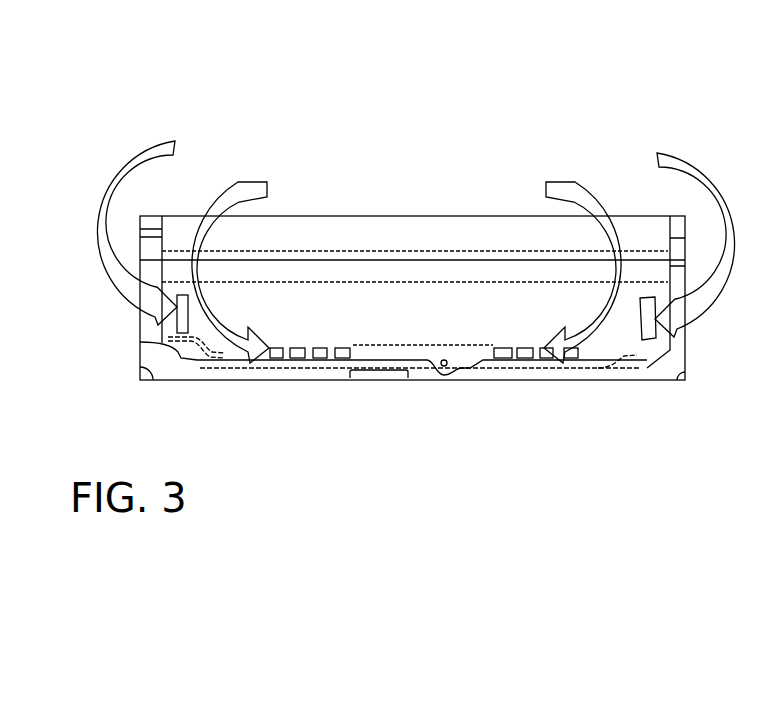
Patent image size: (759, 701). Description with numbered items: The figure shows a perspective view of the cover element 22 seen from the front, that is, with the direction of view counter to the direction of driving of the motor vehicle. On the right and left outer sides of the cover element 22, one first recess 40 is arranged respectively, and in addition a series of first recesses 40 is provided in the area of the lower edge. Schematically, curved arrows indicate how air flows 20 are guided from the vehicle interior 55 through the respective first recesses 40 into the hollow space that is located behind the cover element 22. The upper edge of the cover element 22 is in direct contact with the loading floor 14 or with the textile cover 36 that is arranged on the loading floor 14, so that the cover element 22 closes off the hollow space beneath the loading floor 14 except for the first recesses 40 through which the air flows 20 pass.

The loading floor 14 is at (412, 267).
The textile cover 36 is at (373, 233).
The air flows 20 is at (120, 175).
The cover element 22 is at (441, 315).
The first recess 40 is at (343, 354).
The vehicle interior 55 is at (503, 136).